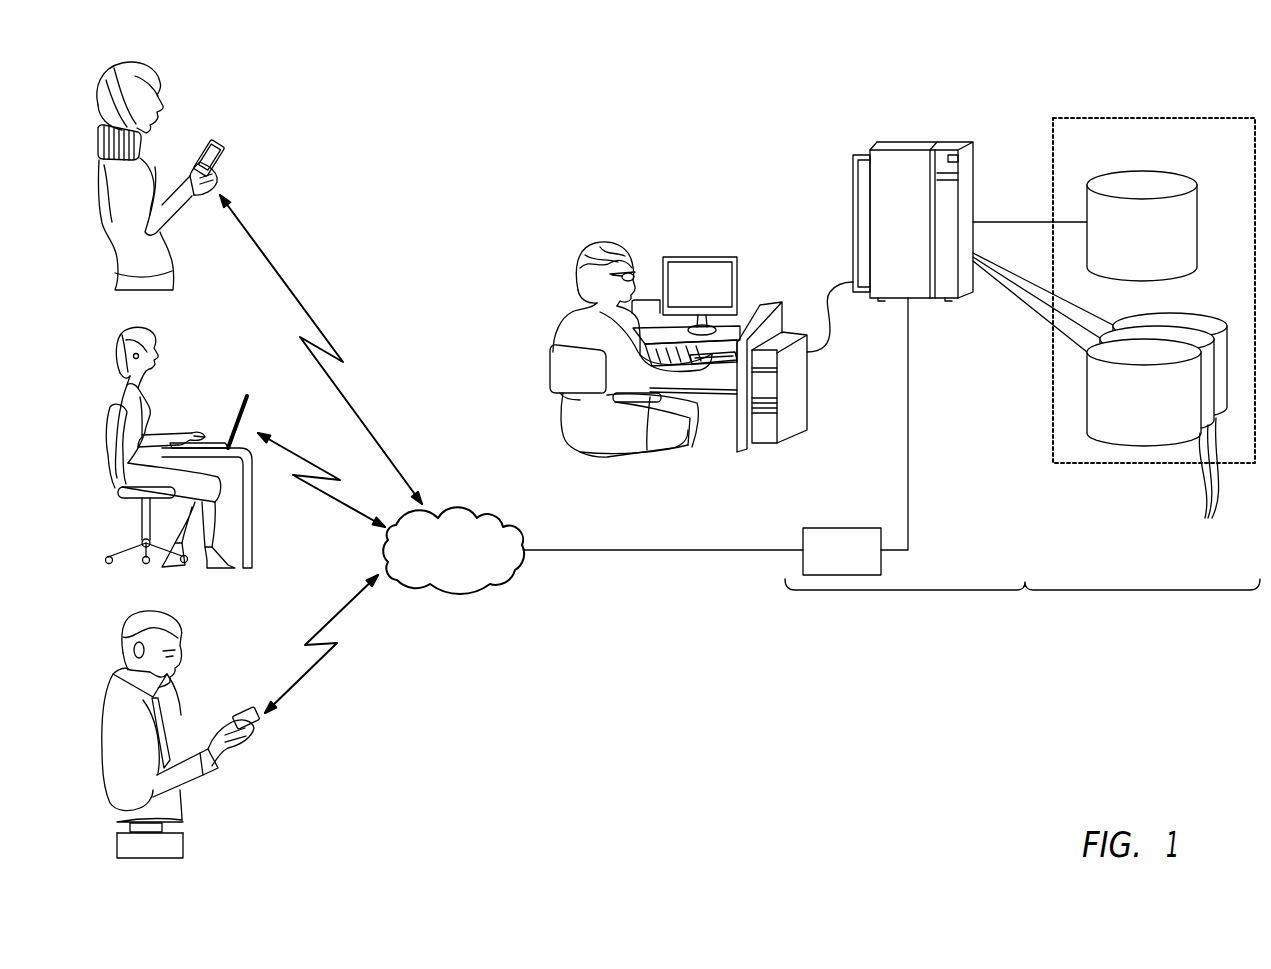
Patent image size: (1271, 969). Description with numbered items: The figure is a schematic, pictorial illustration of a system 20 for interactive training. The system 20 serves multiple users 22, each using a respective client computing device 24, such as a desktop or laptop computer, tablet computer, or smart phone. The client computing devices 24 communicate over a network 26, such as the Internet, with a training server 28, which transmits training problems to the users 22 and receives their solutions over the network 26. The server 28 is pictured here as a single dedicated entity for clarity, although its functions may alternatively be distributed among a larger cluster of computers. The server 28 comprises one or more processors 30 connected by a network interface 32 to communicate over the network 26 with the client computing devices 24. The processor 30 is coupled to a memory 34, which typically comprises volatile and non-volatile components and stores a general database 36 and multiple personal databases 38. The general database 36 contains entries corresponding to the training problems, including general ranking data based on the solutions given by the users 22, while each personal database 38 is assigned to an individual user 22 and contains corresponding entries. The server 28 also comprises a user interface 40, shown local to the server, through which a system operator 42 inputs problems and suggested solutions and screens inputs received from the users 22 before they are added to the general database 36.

The system 20 is at (1178, 751).
The users 22 is at (160, 83).
The client computing devices 24 is at (222, 147).
The network 26 is at (412, 590).
The training server 28 is at (1022, 603).
The processor 30 is at (911, 140).
The network interface 32 is at (842, 528).
The memory 34 is at (1053, 416).
The general database 36 is at (1198, 225).
The personal databases 38 is at (1157, 431).
The user interface 40 is at (722, 256).
The system operator 42 is at (587, 246).